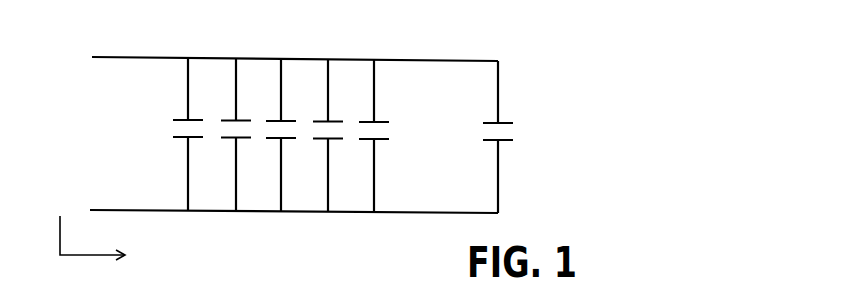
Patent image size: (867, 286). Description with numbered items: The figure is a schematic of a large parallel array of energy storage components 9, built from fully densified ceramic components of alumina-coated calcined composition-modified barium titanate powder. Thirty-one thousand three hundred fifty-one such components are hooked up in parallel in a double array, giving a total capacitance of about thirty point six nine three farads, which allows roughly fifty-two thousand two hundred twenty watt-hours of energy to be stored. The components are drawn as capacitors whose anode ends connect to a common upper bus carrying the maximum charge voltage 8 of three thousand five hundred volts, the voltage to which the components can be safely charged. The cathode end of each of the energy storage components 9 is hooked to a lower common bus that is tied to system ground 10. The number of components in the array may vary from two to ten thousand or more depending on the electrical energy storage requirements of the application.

The maximum charge voltage 8 is at (264, 44).
The energy storage components 9 is at (513, 103).
The system ground 10 is at (266, 224).